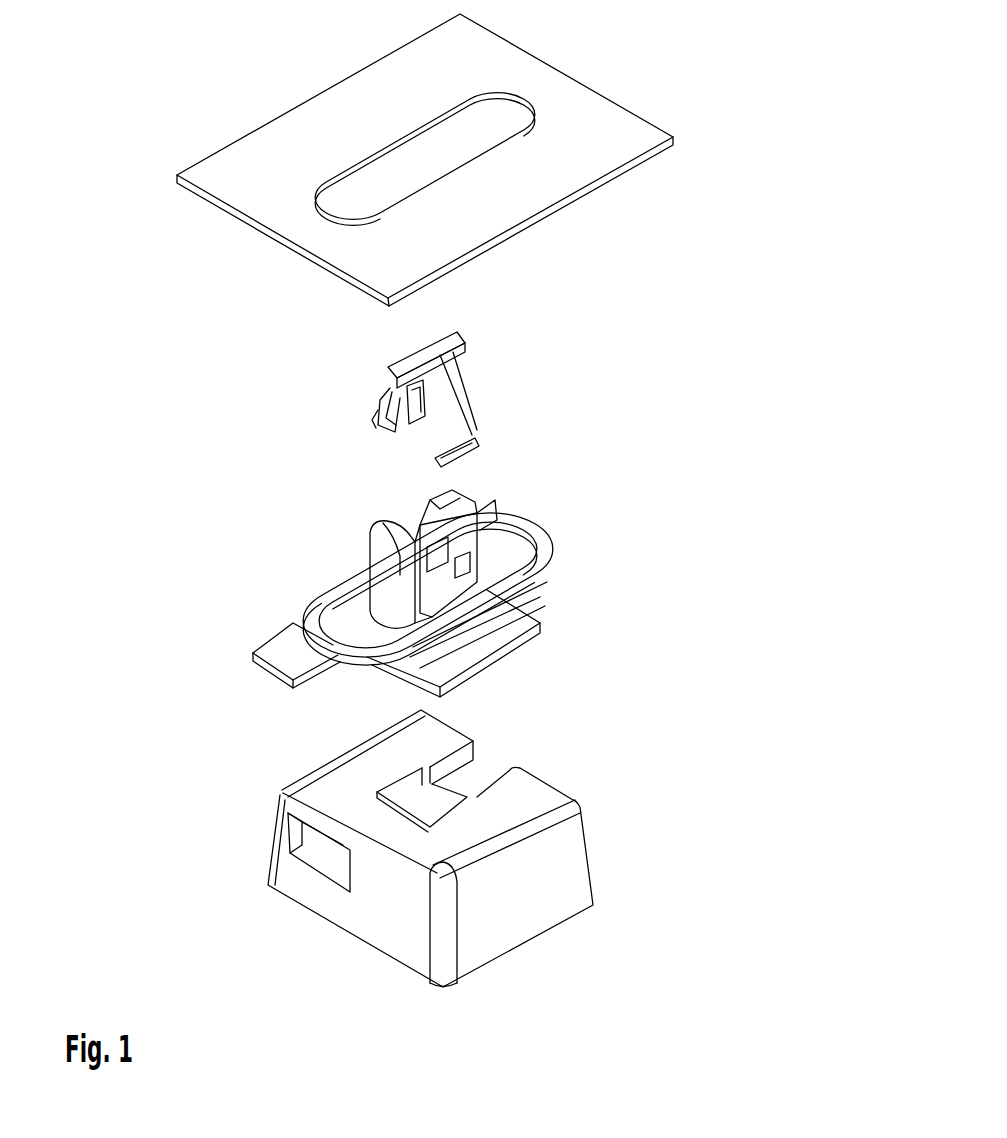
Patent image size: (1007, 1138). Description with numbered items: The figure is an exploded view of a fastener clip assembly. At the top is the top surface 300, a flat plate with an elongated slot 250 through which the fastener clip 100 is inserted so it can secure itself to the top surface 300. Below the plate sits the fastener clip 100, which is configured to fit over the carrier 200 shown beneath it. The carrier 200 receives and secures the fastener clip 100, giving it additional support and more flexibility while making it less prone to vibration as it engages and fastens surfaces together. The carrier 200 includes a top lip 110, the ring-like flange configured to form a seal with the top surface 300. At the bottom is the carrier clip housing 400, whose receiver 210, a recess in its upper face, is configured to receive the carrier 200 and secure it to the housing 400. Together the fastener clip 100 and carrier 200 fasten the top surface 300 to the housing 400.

The fastener clip 100 is at (598, 353).
The top lip 110 is at (317, 600).
The carrier 200 is at (650, 522).
The receiver 210 is at (423, 800).
The slot 250 is at (502, 122).
The top surface 300 is at (767, 71).
The carrier clip housing 400 is at (647, 727).